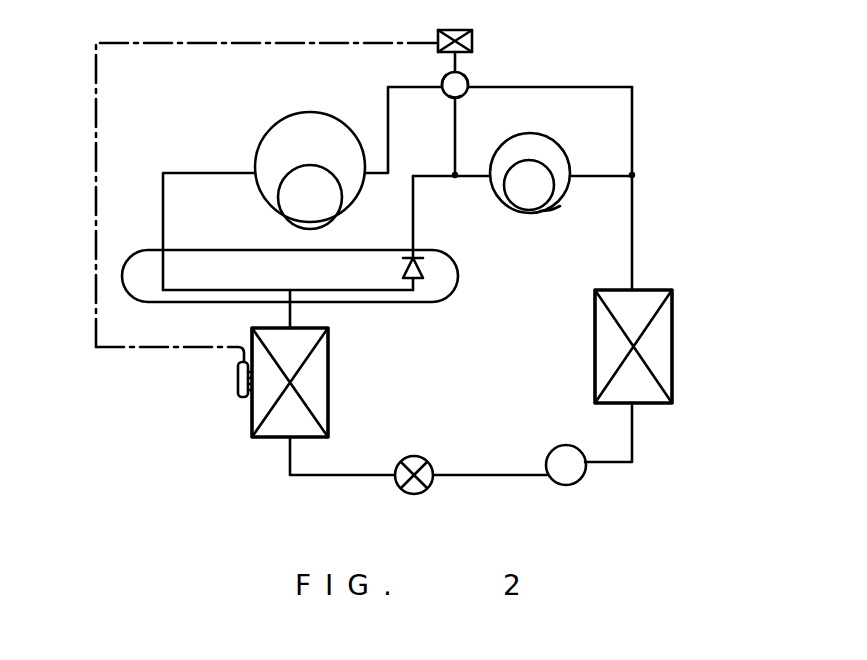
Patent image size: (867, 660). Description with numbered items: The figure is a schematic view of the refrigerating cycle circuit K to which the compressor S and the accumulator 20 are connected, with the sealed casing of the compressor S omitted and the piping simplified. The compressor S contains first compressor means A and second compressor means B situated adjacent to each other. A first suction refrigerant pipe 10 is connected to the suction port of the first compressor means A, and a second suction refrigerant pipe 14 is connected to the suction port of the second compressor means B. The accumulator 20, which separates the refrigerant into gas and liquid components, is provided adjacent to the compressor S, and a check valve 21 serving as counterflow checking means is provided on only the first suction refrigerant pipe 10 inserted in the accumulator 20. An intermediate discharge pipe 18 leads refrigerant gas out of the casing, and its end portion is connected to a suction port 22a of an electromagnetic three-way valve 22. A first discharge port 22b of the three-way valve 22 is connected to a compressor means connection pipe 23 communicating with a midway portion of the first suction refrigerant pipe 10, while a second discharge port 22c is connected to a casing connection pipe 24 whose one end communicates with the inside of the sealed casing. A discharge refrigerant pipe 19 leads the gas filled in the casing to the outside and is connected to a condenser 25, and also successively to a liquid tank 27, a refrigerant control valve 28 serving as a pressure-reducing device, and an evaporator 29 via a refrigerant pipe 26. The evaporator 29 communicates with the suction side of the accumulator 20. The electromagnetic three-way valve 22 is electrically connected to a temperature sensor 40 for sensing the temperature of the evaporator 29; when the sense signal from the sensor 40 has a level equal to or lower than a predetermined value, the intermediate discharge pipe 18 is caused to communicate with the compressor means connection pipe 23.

The first suction refrigerant pipe 10 is at (414, 237).
The second suction refrigerant pipe 14 is at (163, 235).
The intermediate discharge pipe 18 is at (387, 95).
The discharge refrigerant pipe 19 is at (632, 228).
The accumulator 20 is at (148, 302).
The check valve 21 is at (416, 276).
The electromagnetic three-way valve 22 is at (473, 65).
The suction port 22a is at (442, 88).
The first discharge port 22b is at (453, 102).
The second discharge port 22c is at (468, 83).
The compressor means connection pipe 23 is at (456, 120).
The casing connection pipe 24 is at (540, 87).
The condenser 25 is at (672, 372).
The refrigerant pipe 26 is at (345, 478).
The liquid tank 27 is at (575, 483).
The refrigerant control valve 28 is at (427, 490).
The evaporator 29 is at (328, 388).
The temperature sensor 40 is at (238, 383).
The second compressor means B is at (265, 135).
The compressor S is at (573, 158).
The first compressor means A is at (562, 207).
The refrigerating cycle circuit K is at (641, 120).